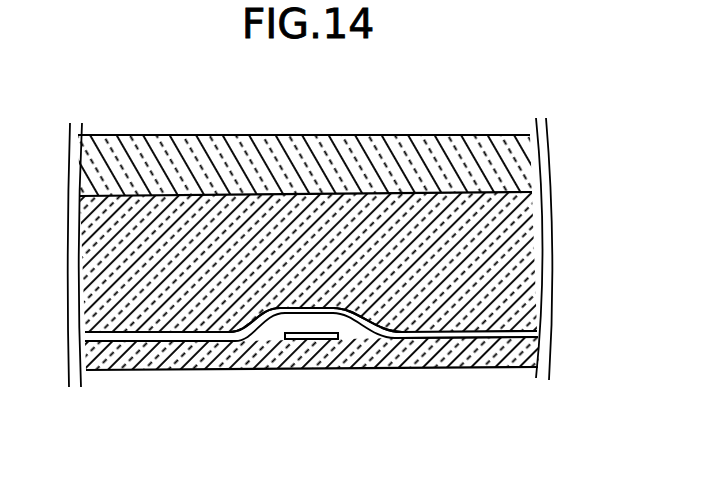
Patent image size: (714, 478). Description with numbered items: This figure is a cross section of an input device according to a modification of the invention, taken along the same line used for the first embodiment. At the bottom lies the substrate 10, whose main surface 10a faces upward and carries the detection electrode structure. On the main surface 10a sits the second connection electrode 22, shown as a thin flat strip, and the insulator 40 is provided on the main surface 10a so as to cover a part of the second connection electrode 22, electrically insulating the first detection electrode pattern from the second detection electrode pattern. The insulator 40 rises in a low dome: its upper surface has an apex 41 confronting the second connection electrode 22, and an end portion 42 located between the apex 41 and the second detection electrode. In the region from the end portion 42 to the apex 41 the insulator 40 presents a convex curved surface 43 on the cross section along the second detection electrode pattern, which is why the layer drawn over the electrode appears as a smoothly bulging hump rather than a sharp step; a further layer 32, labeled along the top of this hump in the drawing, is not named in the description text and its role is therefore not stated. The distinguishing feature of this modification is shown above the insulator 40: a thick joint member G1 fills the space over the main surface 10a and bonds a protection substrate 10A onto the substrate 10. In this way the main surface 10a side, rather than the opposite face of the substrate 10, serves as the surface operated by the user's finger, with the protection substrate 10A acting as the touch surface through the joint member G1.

The protection substrate 10A is at (412, 148).
The joint member G1 is at (498, 246).
The substrate 10 is at (255, 358).
The second connection electrode 22 is at (310, 337).
The insulator 40 is at (357, 337).
The main surface 10a is at (480, 339).
The apex 41 is at (343, 312).
The end portion 42 is at (235, 332).
The convex curved surface 43 is at (250, 320).
The semiconductor layer 32 is at (297, 308).